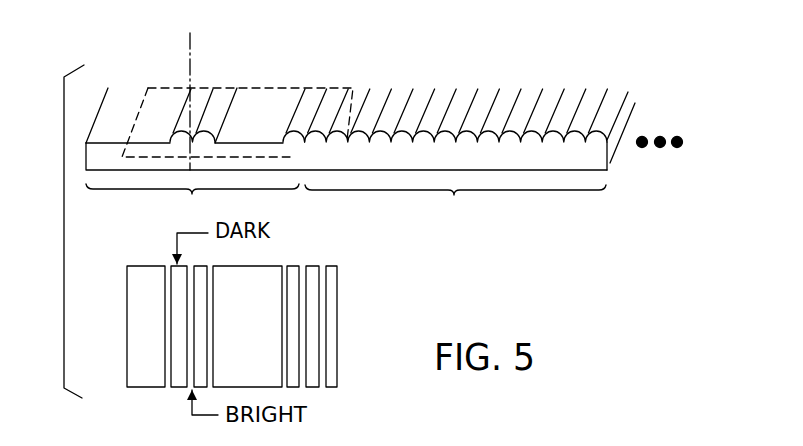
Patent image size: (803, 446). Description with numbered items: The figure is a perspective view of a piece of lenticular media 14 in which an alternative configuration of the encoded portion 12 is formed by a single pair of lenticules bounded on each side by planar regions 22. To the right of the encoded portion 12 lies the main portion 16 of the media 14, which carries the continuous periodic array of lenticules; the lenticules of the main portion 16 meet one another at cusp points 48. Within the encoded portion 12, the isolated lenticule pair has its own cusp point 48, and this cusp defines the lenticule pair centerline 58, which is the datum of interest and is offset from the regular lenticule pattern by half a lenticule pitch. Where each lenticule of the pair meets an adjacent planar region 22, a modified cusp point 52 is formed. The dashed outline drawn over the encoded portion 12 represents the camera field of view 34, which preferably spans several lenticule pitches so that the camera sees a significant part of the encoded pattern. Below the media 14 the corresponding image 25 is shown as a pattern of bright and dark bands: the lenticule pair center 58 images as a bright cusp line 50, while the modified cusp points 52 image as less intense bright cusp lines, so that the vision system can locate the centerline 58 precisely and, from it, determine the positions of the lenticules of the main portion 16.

The encoded portion 12 is at (192, 158).
The lenticular media 14 is at (595, 155).
The main portion 16 is at (455, 206).
The planar region 22 is at (144, 102).
The image 25 is at (267, 308).
The camera field of view 34 is at (305, 88).
The cusp point 48 is at (458, 144).
The bright cusp line 50 is at (282, 265).
The modified cusp point 52 is at (285, 143).
The lenticule pair centerline 58 is at (192, 50).